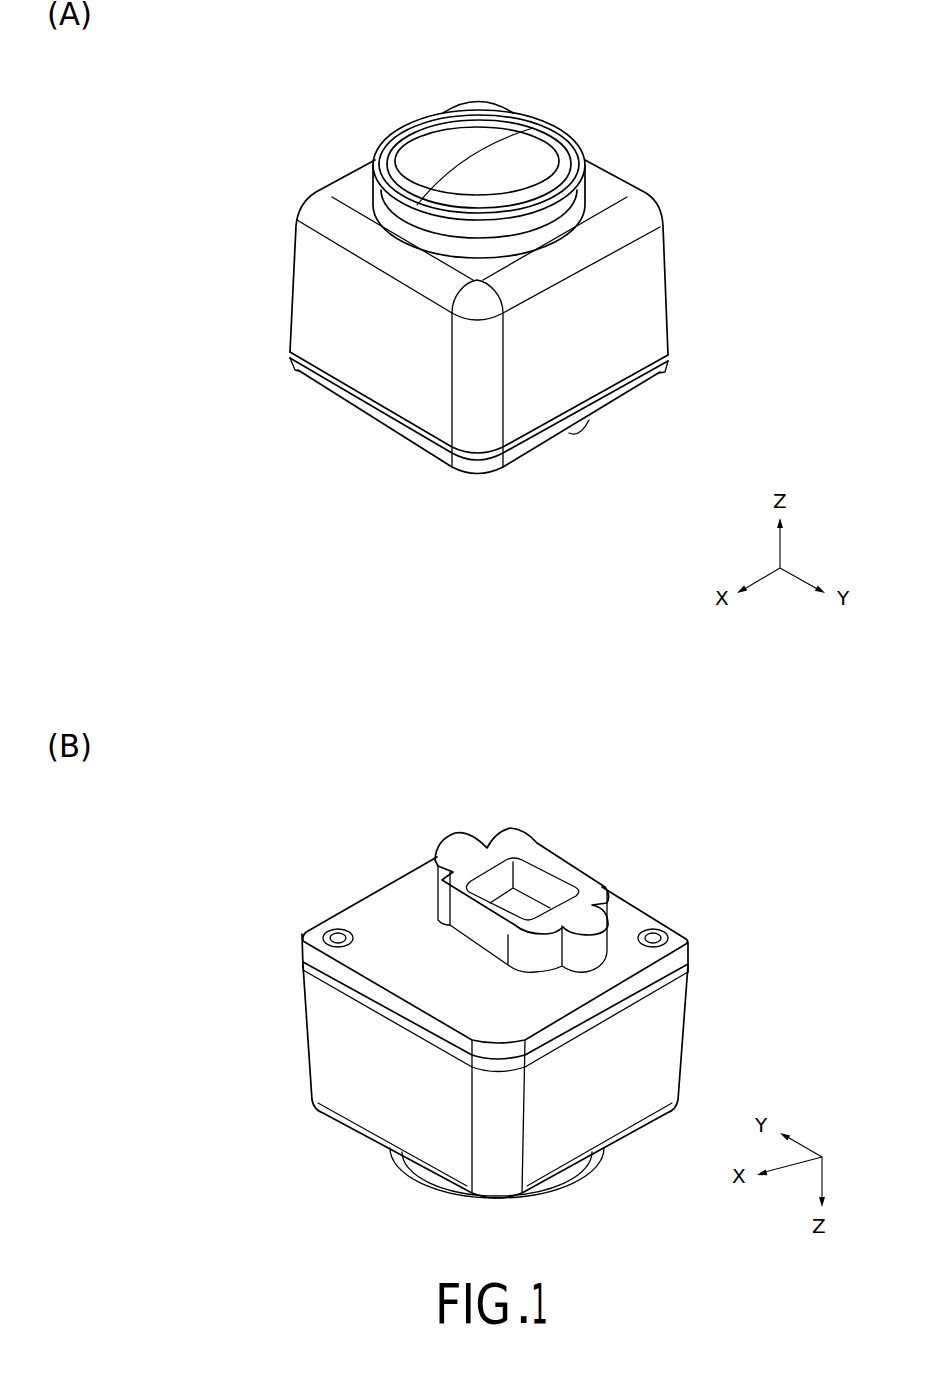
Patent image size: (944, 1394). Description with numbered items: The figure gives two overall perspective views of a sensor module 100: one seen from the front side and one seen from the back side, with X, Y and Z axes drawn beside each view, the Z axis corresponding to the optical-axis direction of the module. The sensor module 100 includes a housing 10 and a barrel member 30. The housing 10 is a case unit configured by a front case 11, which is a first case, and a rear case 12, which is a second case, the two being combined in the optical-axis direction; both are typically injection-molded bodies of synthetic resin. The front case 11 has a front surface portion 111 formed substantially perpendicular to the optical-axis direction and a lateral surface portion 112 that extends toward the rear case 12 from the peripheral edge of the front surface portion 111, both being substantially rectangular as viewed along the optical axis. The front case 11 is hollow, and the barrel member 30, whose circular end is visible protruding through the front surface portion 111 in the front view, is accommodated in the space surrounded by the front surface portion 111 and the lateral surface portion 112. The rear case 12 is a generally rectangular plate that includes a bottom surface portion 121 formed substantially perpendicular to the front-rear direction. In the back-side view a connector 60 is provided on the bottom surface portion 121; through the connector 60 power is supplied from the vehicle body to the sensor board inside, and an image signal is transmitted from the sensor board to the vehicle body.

The sensor module 100 is at (768, 100).
The housing 10 is at (188, 257).
The front case 11 is at (298, 300).
The front surface portion 111 is at (598, 197).
The lateral surface portion 112 is at (647, 280).
The rear case 12 is at (285, 367).
The bottom surface portion 121 is at (593, 407).
The barrel member 30 is at (518, 150).
The connector 60 is at (530, 843).